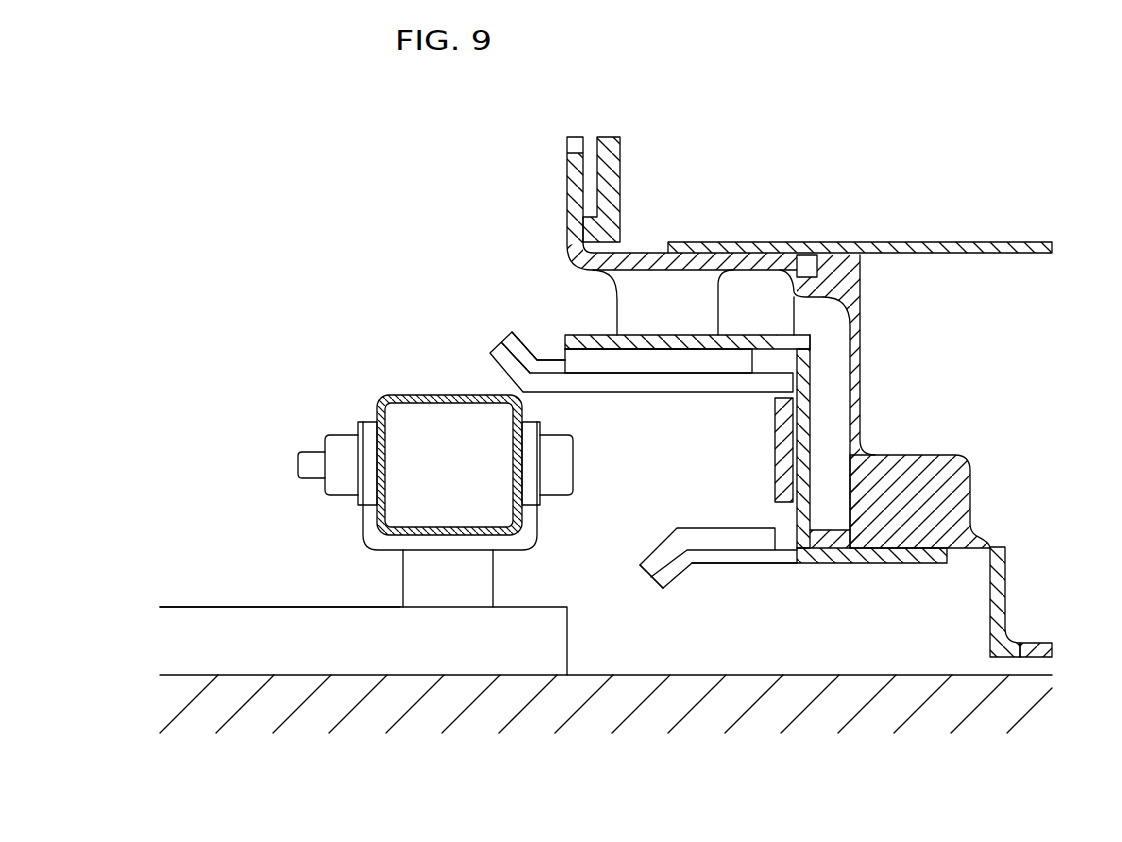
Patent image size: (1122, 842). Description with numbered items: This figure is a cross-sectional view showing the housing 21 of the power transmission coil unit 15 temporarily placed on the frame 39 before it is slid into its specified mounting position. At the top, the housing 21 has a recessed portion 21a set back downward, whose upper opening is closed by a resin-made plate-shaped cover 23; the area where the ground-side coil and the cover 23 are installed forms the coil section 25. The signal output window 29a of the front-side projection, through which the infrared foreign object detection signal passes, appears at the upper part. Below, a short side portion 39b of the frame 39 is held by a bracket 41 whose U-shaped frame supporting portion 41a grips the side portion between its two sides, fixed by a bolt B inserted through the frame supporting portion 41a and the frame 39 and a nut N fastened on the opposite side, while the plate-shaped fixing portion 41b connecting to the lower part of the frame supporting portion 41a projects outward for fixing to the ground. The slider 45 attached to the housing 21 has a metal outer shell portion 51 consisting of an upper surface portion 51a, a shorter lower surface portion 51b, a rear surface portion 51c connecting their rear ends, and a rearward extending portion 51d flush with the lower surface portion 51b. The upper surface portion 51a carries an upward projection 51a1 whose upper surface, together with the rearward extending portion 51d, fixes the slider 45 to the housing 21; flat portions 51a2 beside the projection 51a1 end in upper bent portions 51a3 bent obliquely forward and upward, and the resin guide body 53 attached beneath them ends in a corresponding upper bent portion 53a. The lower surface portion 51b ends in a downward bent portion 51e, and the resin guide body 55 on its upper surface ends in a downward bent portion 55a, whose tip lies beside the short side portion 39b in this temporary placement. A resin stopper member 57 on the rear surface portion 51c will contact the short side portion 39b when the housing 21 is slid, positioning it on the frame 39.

The power transmission coil unit 15 is at (782, 154).
The housing 21 is at (1012, 658).
The recessed portion 21a is at (640, 252).
The cover 23 is at (860, 194).
The coil section 25 is at (970, 241).
The signal output window 29a is at (622, 162).
The frame 39 is at (540, 482).
The short side portion 39b is at (872, 470).
The bracket 41 is at (185, 607).
The frame supporting portion 41a is at (403, 572).
The fixing portion 41b is at (245, 607).
The slider 45 is at (813, 358).
The outer shell portion 51 is at (840, 243).
The upper surface portion 51a is at (677, 333).
The projection 51a1 is at (592, 358).
The flat portion 51a2 is at (527, 340).
The upper bent portion 51a3 is at (530, 356).
The lower surface portion 51b is at (722, 565).
The rear surface portion 51c is at (803, 417).
The rearward extending portion 51d is at (903, 565).
The downward bent portion 51e is at (656, 590).
The guide body 53 is at (593, 377).
The upper bent portion 53a is at (507, 373).
The guide body 55 is at (762, 565).
The downward bent portion 55a is at (653, 560).
The stopper member 57 is at (790, 446).
The bolt B is at (298, 463).
The nut N is at (337, 487).